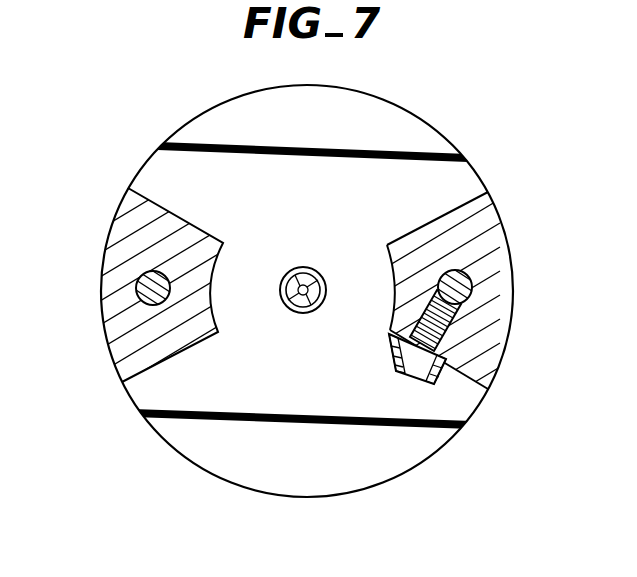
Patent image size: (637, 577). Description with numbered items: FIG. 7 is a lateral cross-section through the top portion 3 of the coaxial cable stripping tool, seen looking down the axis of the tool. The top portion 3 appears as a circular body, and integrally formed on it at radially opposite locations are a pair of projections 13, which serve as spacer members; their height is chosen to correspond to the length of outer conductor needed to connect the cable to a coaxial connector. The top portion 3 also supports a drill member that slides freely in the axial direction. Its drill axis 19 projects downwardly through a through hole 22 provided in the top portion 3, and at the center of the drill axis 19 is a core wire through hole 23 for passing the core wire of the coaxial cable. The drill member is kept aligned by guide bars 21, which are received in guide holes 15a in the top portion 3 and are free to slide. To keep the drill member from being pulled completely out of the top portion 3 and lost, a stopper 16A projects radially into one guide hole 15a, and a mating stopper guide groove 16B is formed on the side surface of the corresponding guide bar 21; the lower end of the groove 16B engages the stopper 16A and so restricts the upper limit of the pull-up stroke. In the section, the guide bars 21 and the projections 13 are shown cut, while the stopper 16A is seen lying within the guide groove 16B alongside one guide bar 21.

The top portion 3 is at (212, 122).
The projections 13 is at (170, 215).
The guide holes 15a is at (455, 270).
The stopper 16A is at (452, 329).
The stopper guide groove 16B is at (472, 265).
The guide bars 21 is at (135, 288).
The drill axis 19 is at (307, 311).
The through hole 22 is at (280, 289).
The core wire through hole 23 is at (322, 304).